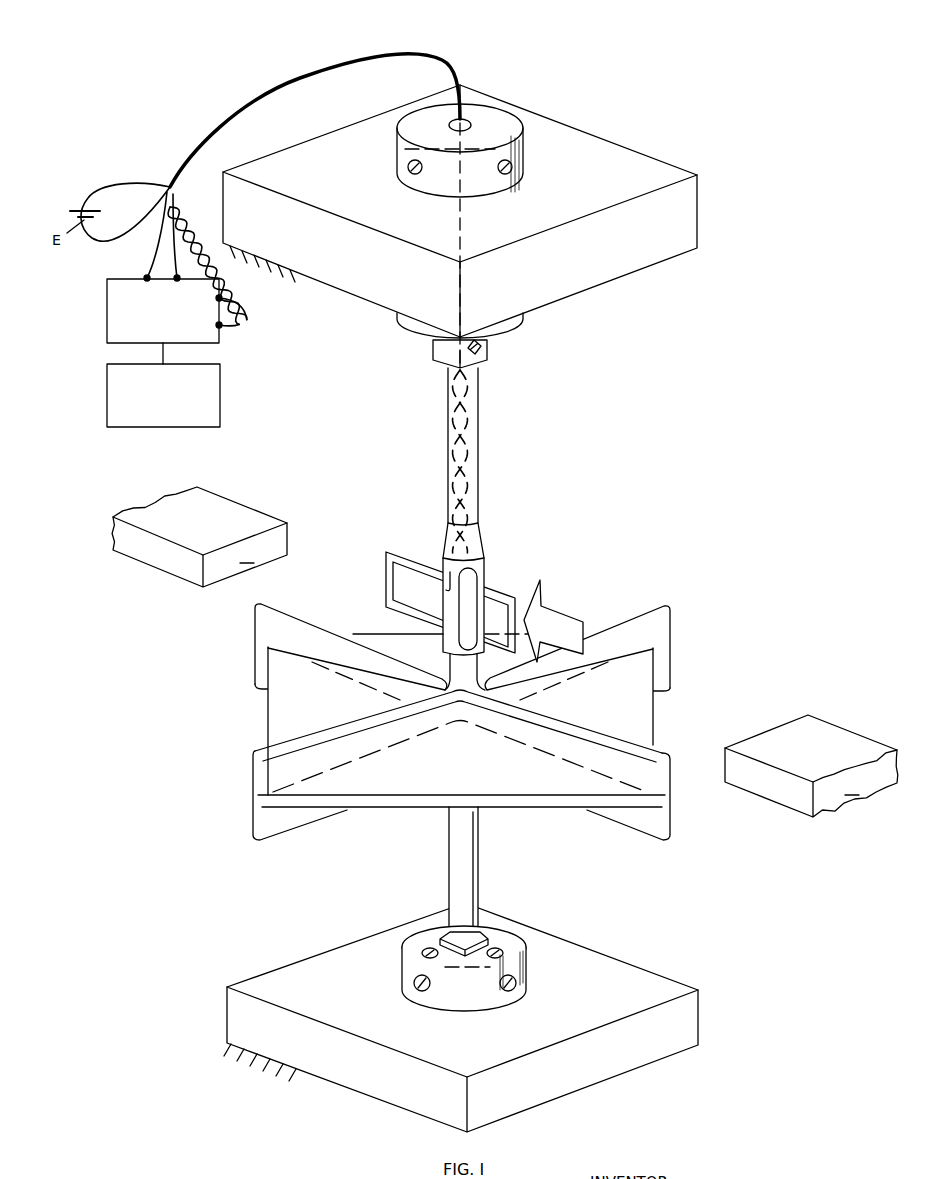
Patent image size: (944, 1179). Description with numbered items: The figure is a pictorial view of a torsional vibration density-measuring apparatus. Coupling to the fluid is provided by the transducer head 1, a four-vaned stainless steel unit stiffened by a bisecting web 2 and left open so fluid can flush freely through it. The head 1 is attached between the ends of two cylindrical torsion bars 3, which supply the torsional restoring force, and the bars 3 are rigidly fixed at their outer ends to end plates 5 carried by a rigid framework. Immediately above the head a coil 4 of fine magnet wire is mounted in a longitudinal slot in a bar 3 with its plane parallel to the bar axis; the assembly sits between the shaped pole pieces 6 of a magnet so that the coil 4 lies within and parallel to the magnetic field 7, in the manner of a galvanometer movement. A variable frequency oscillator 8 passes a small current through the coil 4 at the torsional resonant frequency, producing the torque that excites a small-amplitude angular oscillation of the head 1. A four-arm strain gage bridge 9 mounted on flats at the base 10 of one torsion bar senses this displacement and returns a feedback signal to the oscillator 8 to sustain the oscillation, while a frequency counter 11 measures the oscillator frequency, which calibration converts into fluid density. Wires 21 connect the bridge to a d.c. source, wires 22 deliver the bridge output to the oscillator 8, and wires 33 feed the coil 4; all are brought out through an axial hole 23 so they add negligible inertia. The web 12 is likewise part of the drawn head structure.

The transducer head 1 is at (257, 795).
The bisecting web 2 is at (268, 717).
The torsion bars 3 is at (478, 463).
The coil 4 is at (386, 589).
The end plates 5 is at (560, 269).
The pole pieces 6 is at (150, 557).
The magnetic field 7 is at (568, 596).
The variable frequency oscillator 8 is at (107, 318).
The strain gage bridge 9 is at (486, 350).
The base 10 is at (480, 366).
The frequency counter 11 is at (107, 404).
The central web 12 is at (527, 733).
The wires 21 is at (152, 197).
The wires 22 is at (157, 273).
The axial hole 23 is at (471, 124).
The wires 33 is at (241, 320).